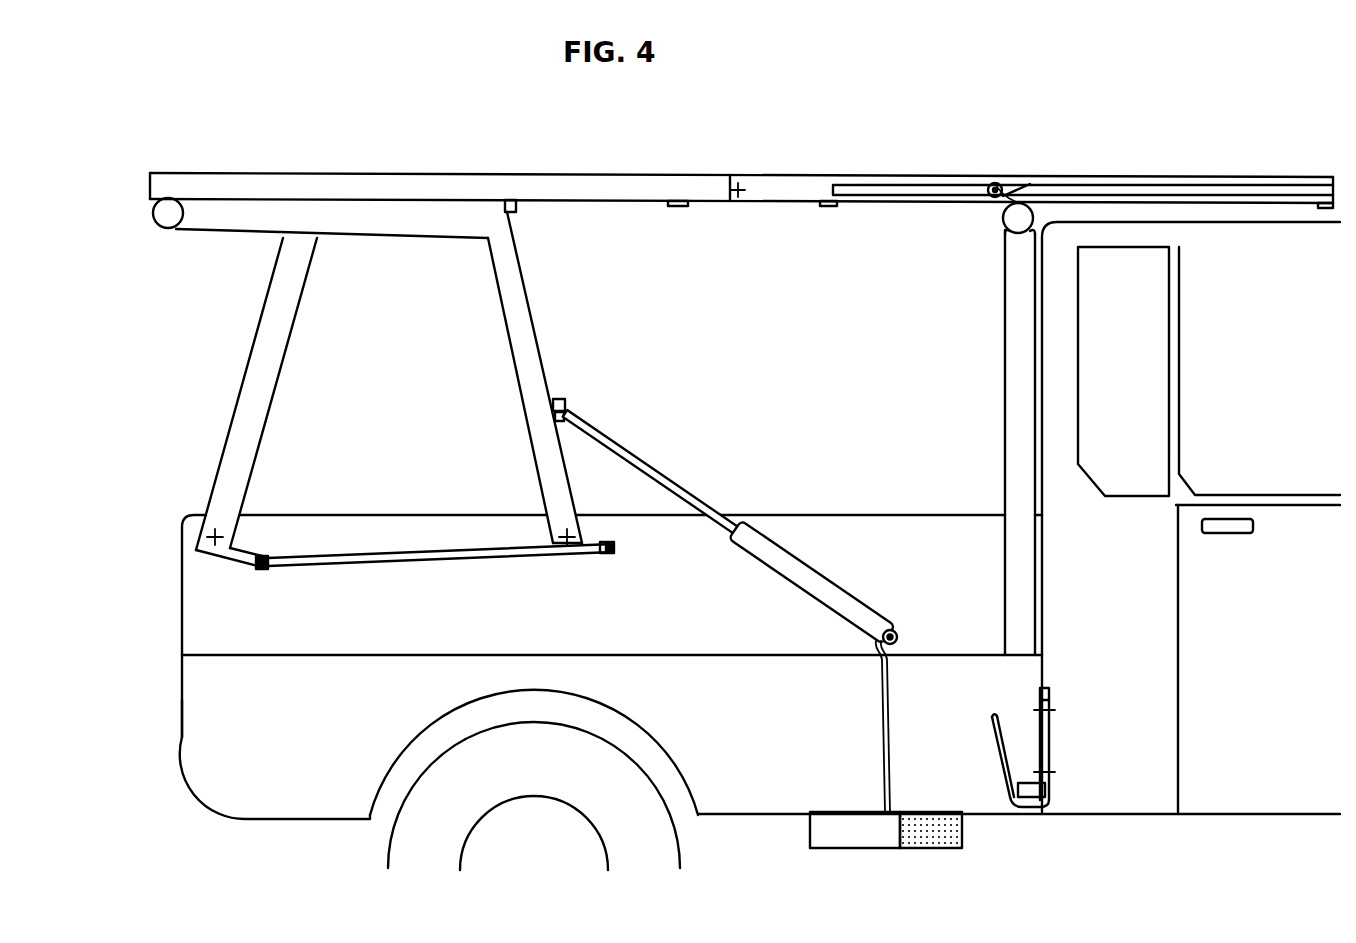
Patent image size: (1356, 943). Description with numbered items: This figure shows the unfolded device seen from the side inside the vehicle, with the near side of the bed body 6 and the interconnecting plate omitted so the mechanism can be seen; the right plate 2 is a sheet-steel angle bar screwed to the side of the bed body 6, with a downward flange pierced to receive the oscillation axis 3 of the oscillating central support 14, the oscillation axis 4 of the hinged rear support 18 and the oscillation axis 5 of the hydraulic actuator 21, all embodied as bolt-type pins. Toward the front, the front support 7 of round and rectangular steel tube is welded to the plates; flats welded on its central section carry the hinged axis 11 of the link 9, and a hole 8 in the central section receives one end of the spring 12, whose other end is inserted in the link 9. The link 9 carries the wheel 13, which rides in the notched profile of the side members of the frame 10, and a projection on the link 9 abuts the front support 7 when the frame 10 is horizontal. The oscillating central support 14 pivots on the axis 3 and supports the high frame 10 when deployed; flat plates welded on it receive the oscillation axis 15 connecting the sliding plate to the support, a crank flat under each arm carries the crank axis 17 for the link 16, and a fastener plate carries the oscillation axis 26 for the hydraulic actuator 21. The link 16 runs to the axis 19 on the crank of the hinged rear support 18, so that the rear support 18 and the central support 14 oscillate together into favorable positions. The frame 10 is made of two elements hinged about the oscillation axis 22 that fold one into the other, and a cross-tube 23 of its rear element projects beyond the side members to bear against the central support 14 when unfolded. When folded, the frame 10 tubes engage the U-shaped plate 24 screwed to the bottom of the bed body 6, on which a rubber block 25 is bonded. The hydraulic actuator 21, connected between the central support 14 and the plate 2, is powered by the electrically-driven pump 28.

The right plate 2 is at (207, 590).
The oscillation axis of the oscillating central support 3 is at (565, 535).
The oscillation axis of the hinged rear support 4 is at (215, 533).
The oscillation axis of the hydraulic actuator 5 is at (901, 632).
The bed body 6 is at (290, 720).
The front support 7 is at (1019, 398).
The hole in the front support 8 is at (1036, 225).
The link 9 is at (1002, 198).
The frame 10 is at (803, 192).
The hinged axis 11 is at (1030, 183).
The spring 12 is at (1015, 240).
The wheel 13 is at (998, 180).
The oscillating central support 14 is at (518, 302).
The oscillation axis connecting the sliding plate to the central support 15 is at (156, 196).
The link 16 is at (383, 558).
The crank oscillation axis 17 is at (614, 549).
The hinged rear support 18 is at (263, 357).
The oscillation axis of the rear support crank 19 is at (268, 570).
The hydraulic actuator 21 is at (818, 588).
The oscillation axis of the frame 22 is at (738, 192).
The cross-tube 23 is at (514, 208).
The plate 24 is at (1050, 722).
The rubber block 25 is at (1032, 790).
The oscillation axis connecting the actuator to the central support 26 is at (566, 405).
The electrically-driven pump 28 is at (825, 830).